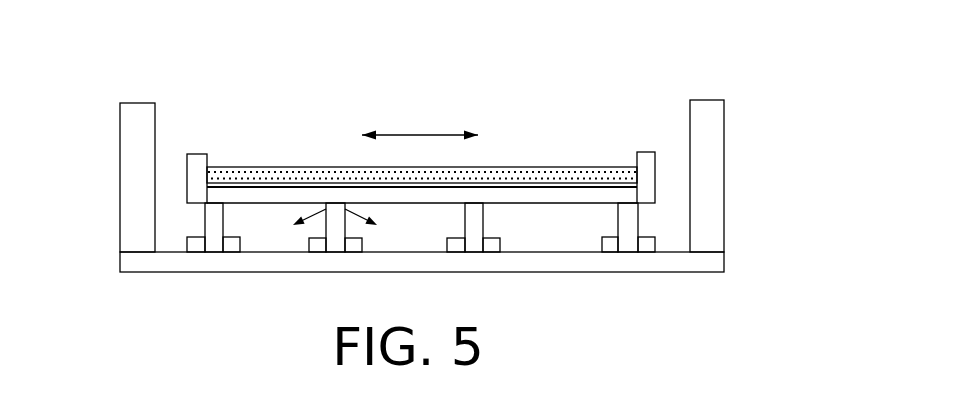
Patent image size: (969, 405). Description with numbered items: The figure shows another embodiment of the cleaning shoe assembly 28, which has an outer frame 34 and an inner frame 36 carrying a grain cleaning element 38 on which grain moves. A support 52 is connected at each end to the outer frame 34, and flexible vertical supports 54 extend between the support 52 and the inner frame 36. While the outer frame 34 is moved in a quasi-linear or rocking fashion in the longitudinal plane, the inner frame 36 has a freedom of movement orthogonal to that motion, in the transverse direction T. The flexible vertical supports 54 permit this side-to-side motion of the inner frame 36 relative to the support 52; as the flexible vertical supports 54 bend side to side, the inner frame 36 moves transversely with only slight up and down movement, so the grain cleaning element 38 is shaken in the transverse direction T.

The cleaning shoe assembly 28 is at (718, 49).
The outer frame 34 is at (120, 160).
The inner frame 36 is at (198, 154).
The grain cleaning element 38 is at (573, 165).
The support 52 is at (632, 272).
The flexible vertical supports 54 is at (323, 222).
The transverse direction T is at (432, 135).